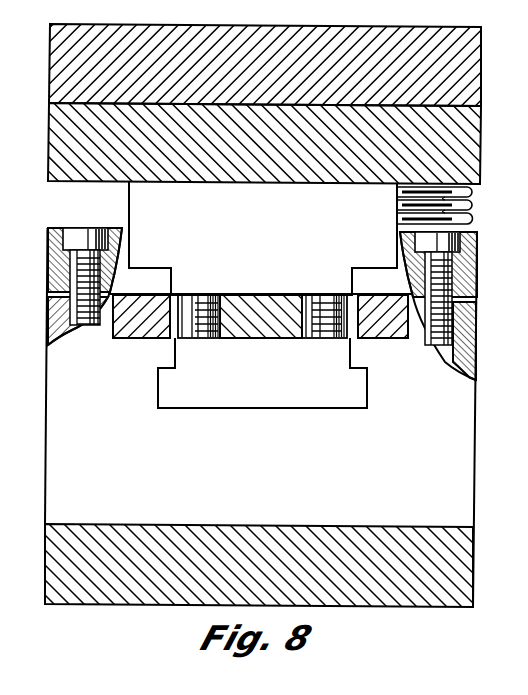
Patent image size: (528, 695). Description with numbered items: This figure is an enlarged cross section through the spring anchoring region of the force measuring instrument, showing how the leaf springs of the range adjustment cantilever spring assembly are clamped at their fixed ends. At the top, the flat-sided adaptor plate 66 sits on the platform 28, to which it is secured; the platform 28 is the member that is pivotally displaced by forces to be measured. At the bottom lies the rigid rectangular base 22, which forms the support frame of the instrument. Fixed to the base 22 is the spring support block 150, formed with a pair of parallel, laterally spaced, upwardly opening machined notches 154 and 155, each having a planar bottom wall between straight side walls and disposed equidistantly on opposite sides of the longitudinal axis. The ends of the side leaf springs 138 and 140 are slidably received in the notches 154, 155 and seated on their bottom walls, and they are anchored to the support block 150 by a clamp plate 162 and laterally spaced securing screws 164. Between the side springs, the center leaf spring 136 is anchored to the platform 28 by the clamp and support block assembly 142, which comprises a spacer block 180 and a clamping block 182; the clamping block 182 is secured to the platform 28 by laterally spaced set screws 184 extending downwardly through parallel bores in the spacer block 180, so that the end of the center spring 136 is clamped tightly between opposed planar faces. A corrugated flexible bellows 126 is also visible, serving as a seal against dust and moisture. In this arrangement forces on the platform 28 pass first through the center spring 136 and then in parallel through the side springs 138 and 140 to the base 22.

The base 22 is at (464, 566).
The platform 28 is at (474, 138).
The adaptor plate 66 is at (474, 67).
The bellows 126 is at (468, 213).
The center leaf spring 136 is at (246, 336).
The side leaf spring 138 is at (110, 340).
The side leaf spring 140 is at (410, 340).
The clamp and support block assembly 142 is at (477, 325).
The spring support block 150 is at (466, 474).
The machined notch 154 is at (150, 341).
The machined notch 155 is at (369, 341).
The clamp plate 162 is at (48, 262).
The securing screws 164 is at (82, 236).
The spacer block 180 is at (273, 242).
The clamping block 182 is at (258, 410).
The set screws 184 is at (318, 293).